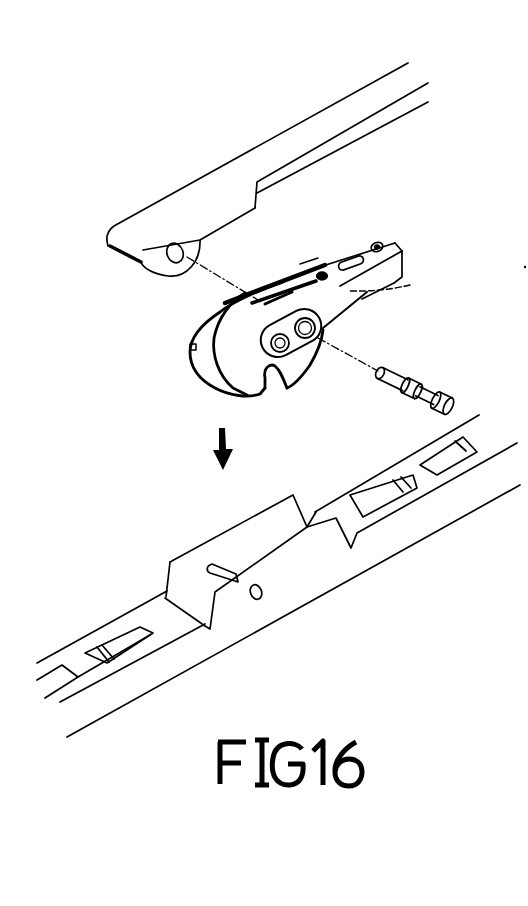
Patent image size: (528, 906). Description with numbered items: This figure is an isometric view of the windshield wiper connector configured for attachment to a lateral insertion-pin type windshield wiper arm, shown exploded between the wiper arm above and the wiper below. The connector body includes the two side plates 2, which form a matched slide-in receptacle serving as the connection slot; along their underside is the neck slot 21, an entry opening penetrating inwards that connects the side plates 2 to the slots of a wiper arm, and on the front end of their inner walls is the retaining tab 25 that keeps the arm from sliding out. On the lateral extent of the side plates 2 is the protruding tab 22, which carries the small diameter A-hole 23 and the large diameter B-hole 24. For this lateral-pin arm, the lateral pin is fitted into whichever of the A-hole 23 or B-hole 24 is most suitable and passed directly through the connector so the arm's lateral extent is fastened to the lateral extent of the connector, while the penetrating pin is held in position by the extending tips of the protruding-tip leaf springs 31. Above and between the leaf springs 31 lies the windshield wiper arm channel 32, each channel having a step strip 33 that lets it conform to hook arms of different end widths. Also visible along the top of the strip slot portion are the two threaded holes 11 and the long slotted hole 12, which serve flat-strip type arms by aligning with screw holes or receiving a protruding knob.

The side plates 2 is at (204, 365).
The threaded holes 11 is at (380, 243).
The long slotted hole 12 is at (347, 260).
The neck slot 21 is at (269, 373).
The protruding tab 22 is at (311, 345).
The small diameter A-hole 23 is at (292, 356).
The large diameter B-hole 24 is at (328, 320).
The retaining tab 25 is at (192, 347).
The protruding-tip leaf springs 31 is at (245, 287).
The windshield wiper arm channel 32 is at (397, 247).
The step strip 33 is at (300, 234).